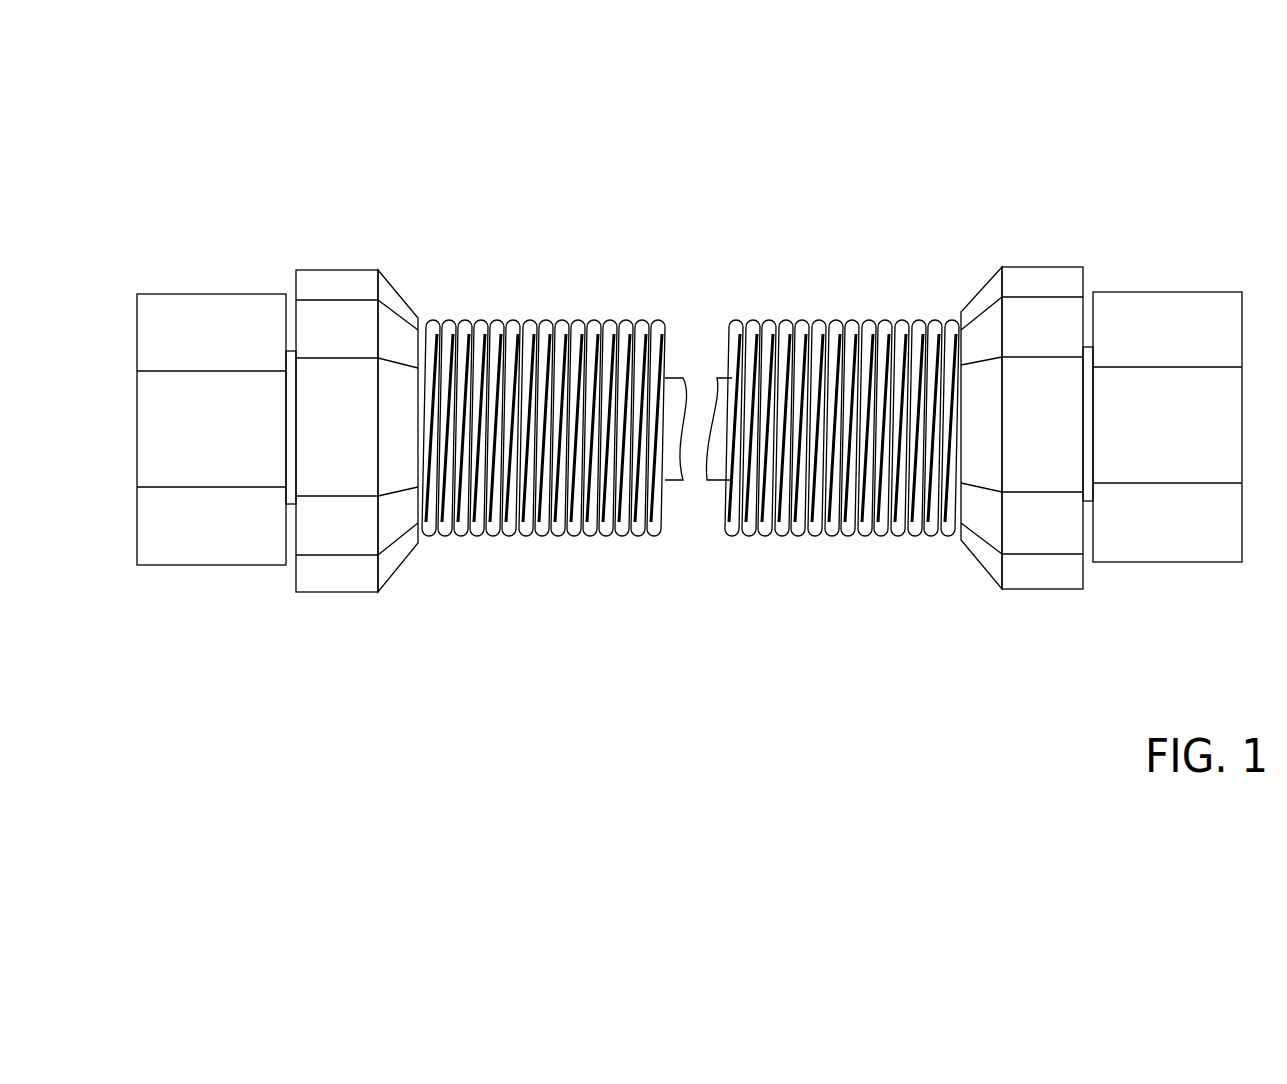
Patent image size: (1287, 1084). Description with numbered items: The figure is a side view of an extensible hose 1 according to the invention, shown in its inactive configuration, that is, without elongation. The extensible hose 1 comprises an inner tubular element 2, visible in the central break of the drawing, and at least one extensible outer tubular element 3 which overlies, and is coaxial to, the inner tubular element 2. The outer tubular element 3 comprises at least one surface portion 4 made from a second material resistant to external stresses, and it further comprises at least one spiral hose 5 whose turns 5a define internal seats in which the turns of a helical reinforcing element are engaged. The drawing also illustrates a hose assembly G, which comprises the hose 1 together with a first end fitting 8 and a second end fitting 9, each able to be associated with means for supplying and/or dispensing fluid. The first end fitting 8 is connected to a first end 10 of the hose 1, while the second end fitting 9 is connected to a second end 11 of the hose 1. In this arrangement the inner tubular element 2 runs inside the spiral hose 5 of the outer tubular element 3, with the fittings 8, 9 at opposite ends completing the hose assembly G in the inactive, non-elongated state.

The extensible hose 1 is at (948, 250).
The inner tubular element 2 is at (726, 382).
The extensible outer tubular element 3 is at (852, 324).
The surface portion 4 is at (798, 312).
The spiral hose 5 is at (551, 330).
The turns 5a is at (483, 330).
The first end fitting 8 is at (1176, 260).
The second end fitting 9 is at (255, 280).
The first end 10 is at (962, 330).
The second end 11 is at (448, 338).
The hose assembly G is at (1096, 253).